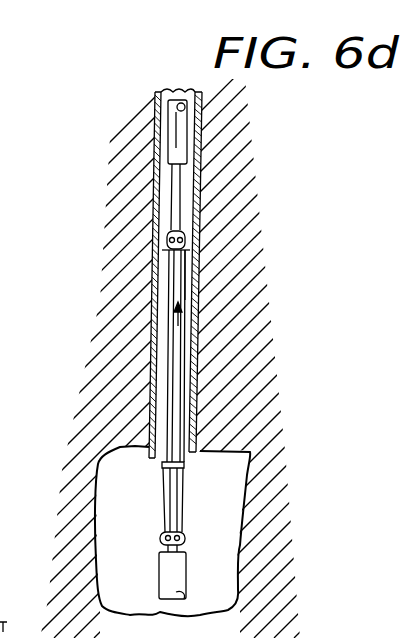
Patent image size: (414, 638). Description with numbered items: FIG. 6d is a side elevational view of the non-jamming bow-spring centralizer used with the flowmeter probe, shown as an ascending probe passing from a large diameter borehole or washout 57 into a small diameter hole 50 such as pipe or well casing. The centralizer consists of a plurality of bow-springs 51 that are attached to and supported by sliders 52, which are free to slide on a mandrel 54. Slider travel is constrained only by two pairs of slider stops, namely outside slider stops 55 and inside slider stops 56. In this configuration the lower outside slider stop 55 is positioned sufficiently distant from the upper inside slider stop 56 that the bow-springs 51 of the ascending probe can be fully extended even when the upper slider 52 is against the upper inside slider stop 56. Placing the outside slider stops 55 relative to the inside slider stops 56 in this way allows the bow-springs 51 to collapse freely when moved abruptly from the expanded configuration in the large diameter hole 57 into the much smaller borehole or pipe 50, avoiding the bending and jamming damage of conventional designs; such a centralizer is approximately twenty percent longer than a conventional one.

The small diameter hole 50 is at (202, 133).
The bow-springs 51 is at (150, 473).
The sliders 52 is at (186, 245).
The mandrel 54 is at (186, 231).
The outside slider stops 55 is at (178, 148).
The inside slider stops 56 is at (182, 256).
The large diameter borehole 57 is at (118, 479).